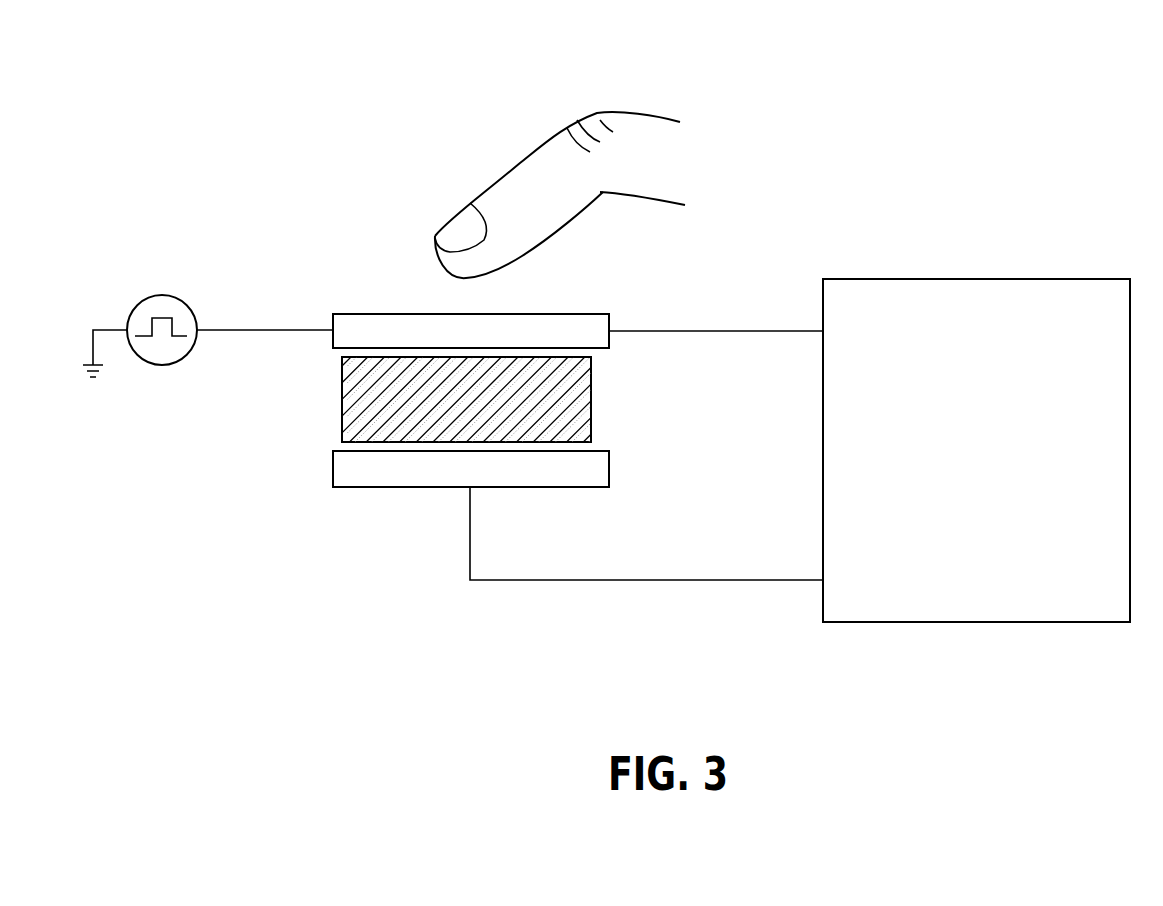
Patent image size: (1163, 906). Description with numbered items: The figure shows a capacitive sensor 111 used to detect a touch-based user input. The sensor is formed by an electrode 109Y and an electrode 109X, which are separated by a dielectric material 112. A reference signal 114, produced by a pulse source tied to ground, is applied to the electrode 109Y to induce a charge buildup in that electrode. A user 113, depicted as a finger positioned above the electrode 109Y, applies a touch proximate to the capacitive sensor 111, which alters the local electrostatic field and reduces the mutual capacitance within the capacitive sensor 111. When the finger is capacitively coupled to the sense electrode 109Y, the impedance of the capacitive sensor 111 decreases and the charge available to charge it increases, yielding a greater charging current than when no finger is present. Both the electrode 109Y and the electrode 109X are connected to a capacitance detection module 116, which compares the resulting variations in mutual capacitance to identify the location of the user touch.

The capacitive sensor 111 is at (216, 98).
The user 113 is at (642, 142).
The reference signal 114 is at (162, 295).
The electrode 109Y is at (590, 339).
The dielectric material 112 is at (362, 395).
The electrode 109X is at (350, 468).
The capacitance detection module 116 is at (976, 450).